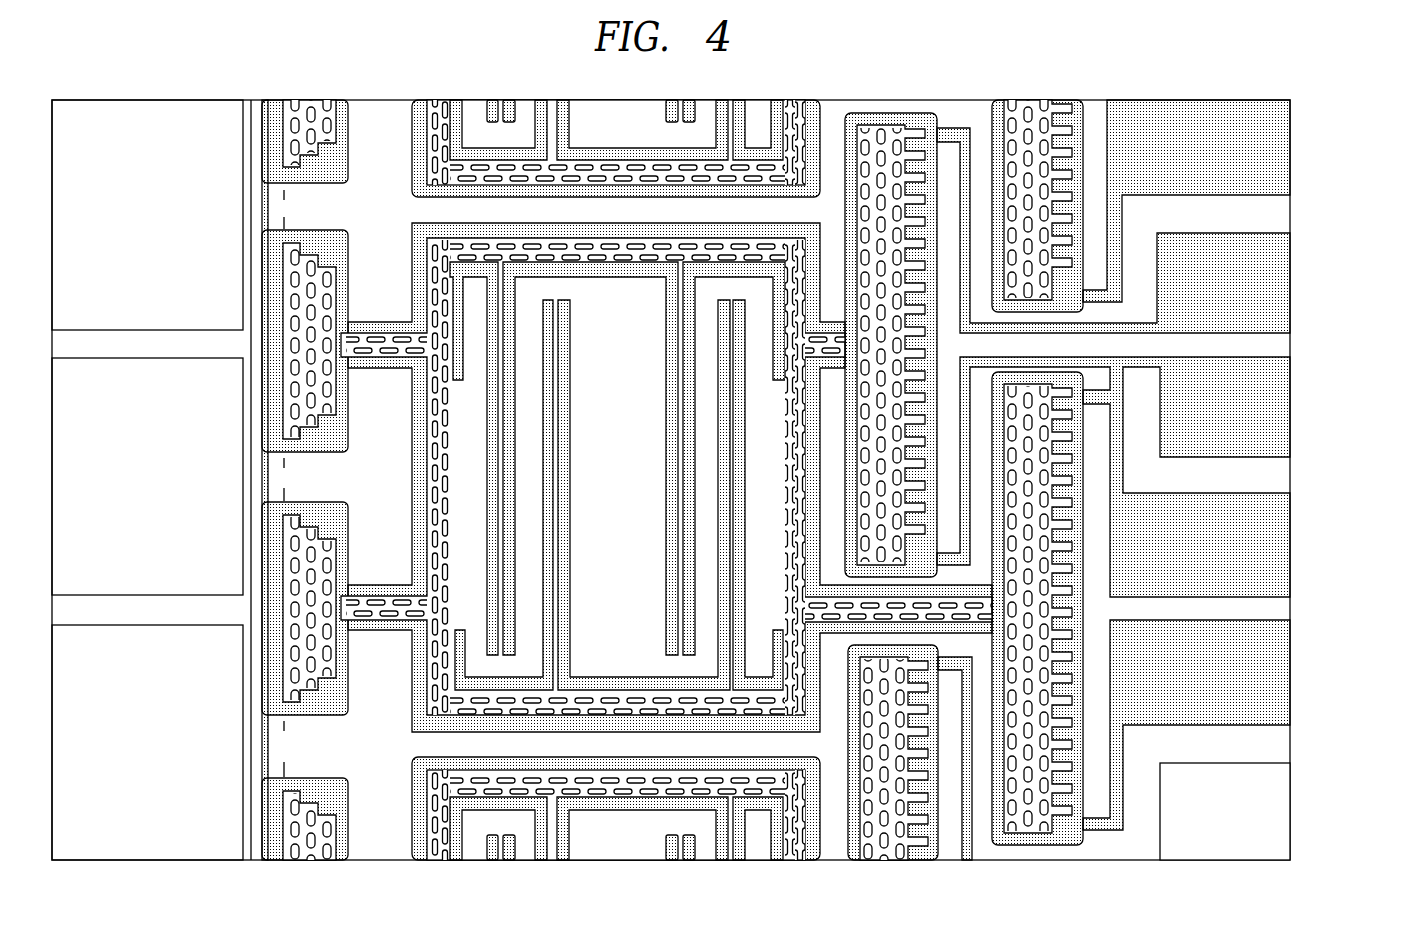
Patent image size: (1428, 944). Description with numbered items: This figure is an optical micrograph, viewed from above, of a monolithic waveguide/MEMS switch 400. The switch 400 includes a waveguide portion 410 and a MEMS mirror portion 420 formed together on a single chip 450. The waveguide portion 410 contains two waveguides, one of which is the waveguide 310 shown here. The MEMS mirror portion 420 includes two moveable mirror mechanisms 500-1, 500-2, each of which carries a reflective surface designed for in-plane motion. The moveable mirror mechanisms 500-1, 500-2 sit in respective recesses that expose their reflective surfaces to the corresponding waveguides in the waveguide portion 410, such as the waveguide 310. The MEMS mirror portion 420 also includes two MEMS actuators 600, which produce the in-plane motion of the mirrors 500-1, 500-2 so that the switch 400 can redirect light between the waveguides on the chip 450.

The monolithic waveguide/MEMS switch 400 is at (1322, 84).
The waveguide portion 410 is at (148, 99).
The MEMS mirror portion 420 is at (935, 99).
The waveguide 310 is at (110, 343).
The single chip 450 is at (165, 790).
The moveable mirror mechanism 500-1 is at (300, 405).
The moveable mirror mechanism 500-2 is at (298, 580).
The MEMS actuator 600 is at (893, 375).